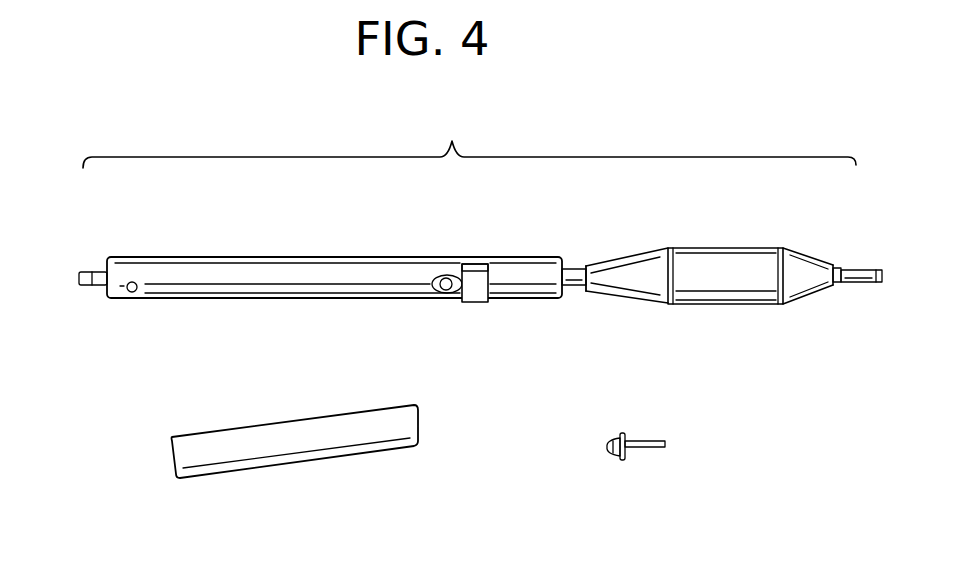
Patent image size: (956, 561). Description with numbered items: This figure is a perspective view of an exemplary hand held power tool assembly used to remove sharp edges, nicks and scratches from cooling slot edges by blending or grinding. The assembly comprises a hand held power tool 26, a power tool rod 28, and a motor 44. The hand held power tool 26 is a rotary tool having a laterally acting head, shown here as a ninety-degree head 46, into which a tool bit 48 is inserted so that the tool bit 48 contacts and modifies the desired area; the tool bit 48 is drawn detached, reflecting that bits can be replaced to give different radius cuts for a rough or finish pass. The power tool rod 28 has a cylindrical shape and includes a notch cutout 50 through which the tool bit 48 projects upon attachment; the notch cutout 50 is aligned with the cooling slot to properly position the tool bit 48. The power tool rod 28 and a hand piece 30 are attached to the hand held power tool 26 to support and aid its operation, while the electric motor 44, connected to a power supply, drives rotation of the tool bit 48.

The power tool rod 28 is at (315, 263).
The ninety-degree head 46 is at (473, 292).
The notch cutout 50 is at (477, 267).
The hand held power tool 26 is at (578, 272).
The motor 44 is at (740, 260).
The hand piece 30 is at (313, 443).
The tool bit 48 is at (645, 448).